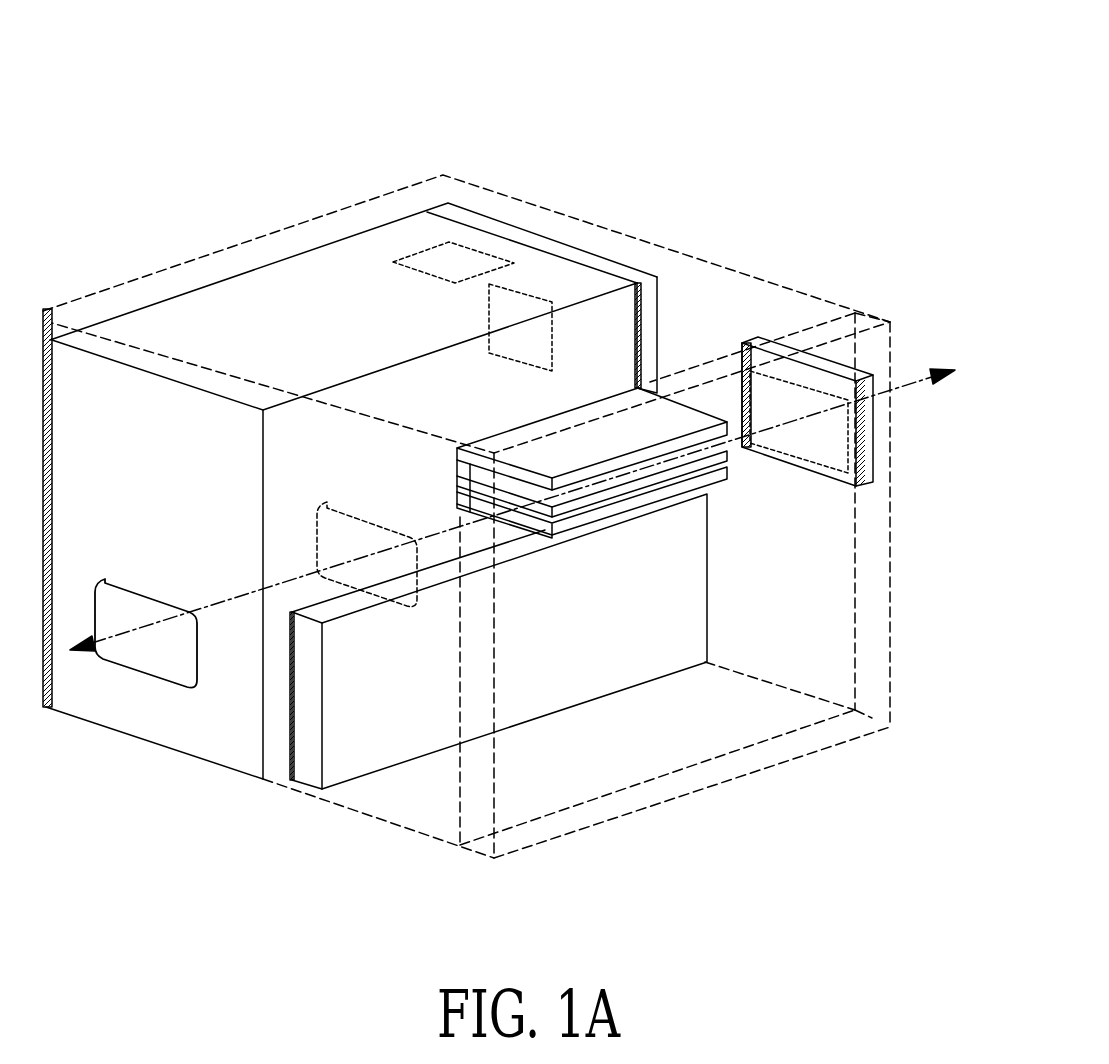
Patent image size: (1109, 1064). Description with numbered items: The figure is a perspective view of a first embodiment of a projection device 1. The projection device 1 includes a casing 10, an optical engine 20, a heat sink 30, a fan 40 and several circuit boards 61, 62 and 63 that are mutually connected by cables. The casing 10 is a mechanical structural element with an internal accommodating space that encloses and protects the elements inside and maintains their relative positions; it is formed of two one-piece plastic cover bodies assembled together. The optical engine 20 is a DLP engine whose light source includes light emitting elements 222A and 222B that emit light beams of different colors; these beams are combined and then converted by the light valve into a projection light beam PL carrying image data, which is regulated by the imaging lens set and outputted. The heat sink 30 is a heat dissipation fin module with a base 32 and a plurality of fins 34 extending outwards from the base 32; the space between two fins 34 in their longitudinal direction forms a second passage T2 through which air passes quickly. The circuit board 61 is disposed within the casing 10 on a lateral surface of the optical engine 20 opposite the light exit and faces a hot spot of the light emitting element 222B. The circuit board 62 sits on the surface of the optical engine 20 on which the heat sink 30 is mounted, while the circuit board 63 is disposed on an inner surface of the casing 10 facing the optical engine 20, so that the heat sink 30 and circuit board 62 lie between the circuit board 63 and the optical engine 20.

The projection device 1 is at (825, 125).
The casing 10 is at (733, 273).
The optical engine 20 is at (243, 273).
The light emitting element 222A is at (470, 248).
The light emitting element 222B is at (528, 292).
The heat sink 30 is at (592, 488).
The base 32 is at (456, 450).
The fins 34 is at (495, 458).
The fan 40 is at (802, 470).
The circuit board 61 is at (628, 278).
The circuit board 62 is at (313, 778).
The circuit board 63 is at (459, 808).
The second passage T2 is at (573, 517).
The projection light beam PL is at (140, 629).